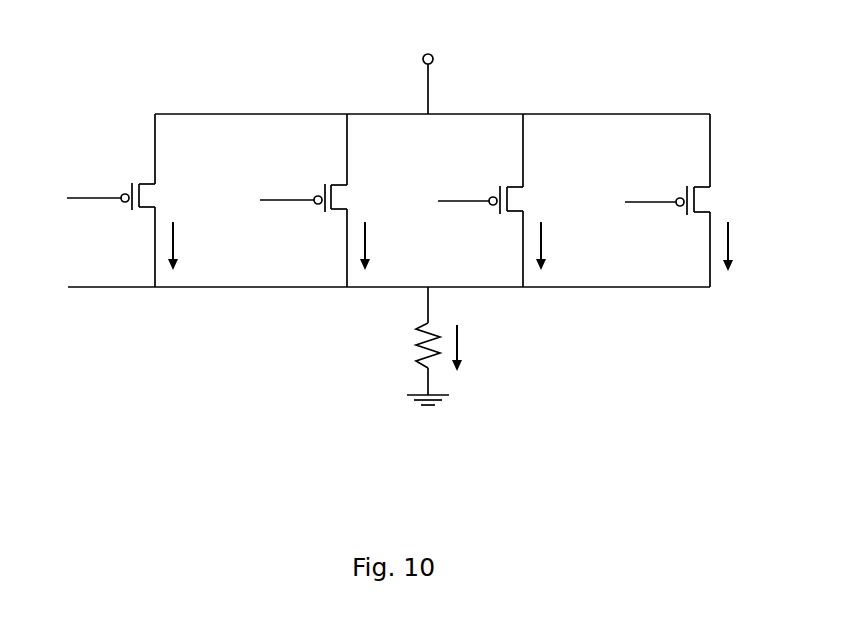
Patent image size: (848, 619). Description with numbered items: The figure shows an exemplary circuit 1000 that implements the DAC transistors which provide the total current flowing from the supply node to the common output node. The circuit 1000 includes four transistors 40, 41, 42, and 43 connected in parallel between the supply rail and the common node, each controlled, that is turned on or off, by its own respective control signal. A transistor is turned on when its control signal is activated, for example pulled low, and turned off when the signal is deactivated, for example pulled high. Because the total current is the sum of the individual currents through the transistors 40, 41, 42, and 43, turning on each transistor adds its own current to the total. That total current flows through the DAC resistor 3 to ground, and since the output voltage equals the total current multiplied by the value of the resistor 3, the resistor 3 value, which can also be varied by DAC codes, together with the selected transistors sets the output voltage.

The circuit 1000 is at (413, 291).
The DAC transistor 40 is at (111, 183).
The DAC transistor 41 is at (303, 184).
The DAC transistor 42 is at (480, 185).
The DAC transistor 43 is at (667, 186).
The DAC resistor 3 is at (414, 346).